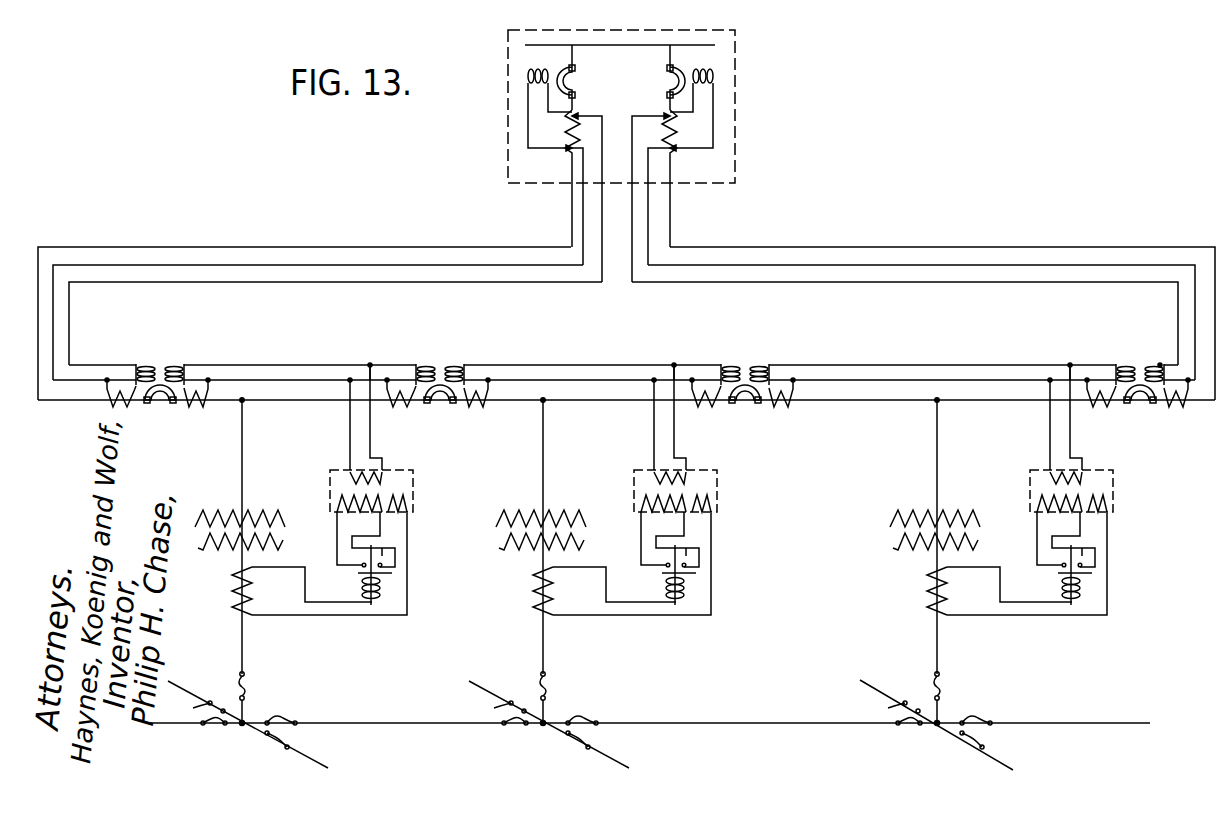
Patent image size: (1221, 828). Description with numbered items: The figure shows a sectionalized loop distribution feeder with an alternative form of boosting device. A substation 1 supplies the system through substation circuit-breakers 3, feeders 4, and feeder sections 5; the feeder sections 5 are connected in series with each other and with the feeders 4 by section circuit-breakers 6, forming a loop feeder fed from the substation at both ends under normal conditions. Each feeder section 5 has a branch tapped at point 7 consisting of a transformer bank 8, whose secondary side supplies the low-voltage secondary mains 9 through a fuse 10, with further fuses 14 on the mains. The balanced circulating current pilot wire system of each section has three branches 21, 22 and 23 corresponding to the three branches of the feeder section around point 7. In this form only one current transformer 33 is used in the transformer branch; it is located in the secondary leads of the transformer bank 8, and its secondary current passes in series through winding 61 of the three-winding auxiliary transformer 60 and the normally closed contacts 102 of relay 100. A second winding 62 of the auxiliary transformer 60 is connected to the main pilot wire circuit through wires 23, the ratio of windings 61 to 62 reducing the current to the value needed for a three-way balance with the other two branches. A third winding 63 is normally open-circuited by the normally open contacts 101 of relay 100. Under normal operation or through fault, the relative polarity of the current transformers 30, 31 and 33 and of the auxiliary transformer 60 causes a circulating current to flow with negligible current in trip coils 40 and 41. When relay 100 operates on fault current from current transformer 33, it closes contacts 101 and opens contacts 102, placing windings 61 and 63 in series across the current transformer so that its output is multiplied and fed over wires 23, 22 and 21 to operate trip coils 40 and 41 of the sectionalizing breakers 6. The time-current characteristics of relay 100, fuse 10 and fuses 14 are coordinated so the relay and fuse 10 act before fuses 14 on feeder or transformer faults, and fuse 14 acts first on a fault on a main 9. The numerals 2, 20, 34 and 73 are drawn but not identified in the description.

The substation 1 is at (737, 83).
The bus bar 2 is at (621, 47).
The substation circuit-breaker 3 is at (576, 84).
The feeder 4 is at (305, 247).
The feeder section 5 is at (293, 402).
The section circuit-breaker 6 is at (650, 410).
The tap point 7 is at (244, 399).
The transformer bank 8 is at (196, 528).
The secondary mains 9 is at (368, 722).
The fuse 10 is at (246, 676).
The fuse 14 is at (206, 708).
The intermediate conductor loop 20 is at (297, 266).
The pilot wire branch 21 is at (243, 365).
The pilot wire branch 22 is at (380, 365).
The pilot wires 23 is at (368, 428).
The current transformer 30 is at (688, 407).
The current transformer 31 is at (610, 407).
The current transformer 33 is at (232, 589).
The resistor with taps 34 is at (566, 126).
The trip coil 40 is at (672, 359).
The trip coil 41 is at (637, 362).
The three-winding auxiliary transformer 60 is at (414, 475).
The first winding 61 is at (401, 507).
The second winding 62 is at (380, 479).
The third winding 63 is at (709, 513).
The current coil 73 is at (539, 69).
The relay 100 is at (384, 600).
The normally open contacts 101 is at (396, 573).
The normally closed contacts 102 is at (398, 549).